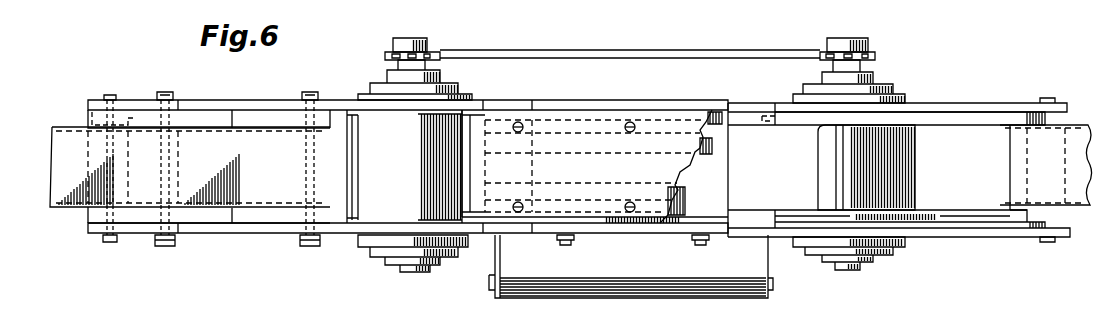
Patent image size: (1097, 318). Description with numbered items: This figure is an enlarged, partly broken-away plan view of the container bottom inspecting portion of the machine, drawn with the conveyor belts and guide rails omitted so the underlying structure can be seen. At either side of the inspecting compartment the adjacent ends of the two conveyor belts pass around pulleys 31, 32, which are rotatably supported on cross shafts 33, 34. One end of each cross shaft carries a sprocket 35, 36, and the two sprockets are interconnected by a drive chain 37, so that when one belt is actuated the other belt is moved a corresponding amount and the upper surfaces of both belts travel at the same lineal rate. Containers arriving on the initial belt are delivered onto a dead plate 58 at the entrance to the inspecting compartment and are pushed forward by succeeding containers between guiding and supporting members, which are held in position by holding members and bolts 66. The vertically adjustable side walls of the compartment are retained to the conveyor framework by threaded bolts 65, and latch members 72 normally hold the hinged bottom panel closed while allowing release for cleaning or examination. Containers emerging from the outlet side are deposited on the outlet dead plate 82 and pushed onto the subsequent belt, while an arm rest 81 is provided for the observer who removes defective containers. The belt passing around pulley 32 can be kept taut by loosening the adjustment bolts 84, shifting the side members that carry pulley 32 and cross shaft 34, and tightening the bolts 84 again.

The pulley 31 is at (866, 167).
The pulley 32 is at (404, 166).
The cross shaft 33 is at (852, 36).
The cross shaft 34 is at (410, 37).
The sprocket 35 is at (878, 56).
The sprocket 36 is at (388, 55).
The drive chain 37 is at (495, 50).
The dead plate 58 is at (805, 196).
The threaded bolt 65 is at (566, 246).
The bolt 66 is at (523, 134).
The latch member 72 is at (774, 286).
The arm rest 81 is at (676, 281).
The outlet dead plate 82 is at (440, 163).
The adjustment bolt 84 is at (164, 249).